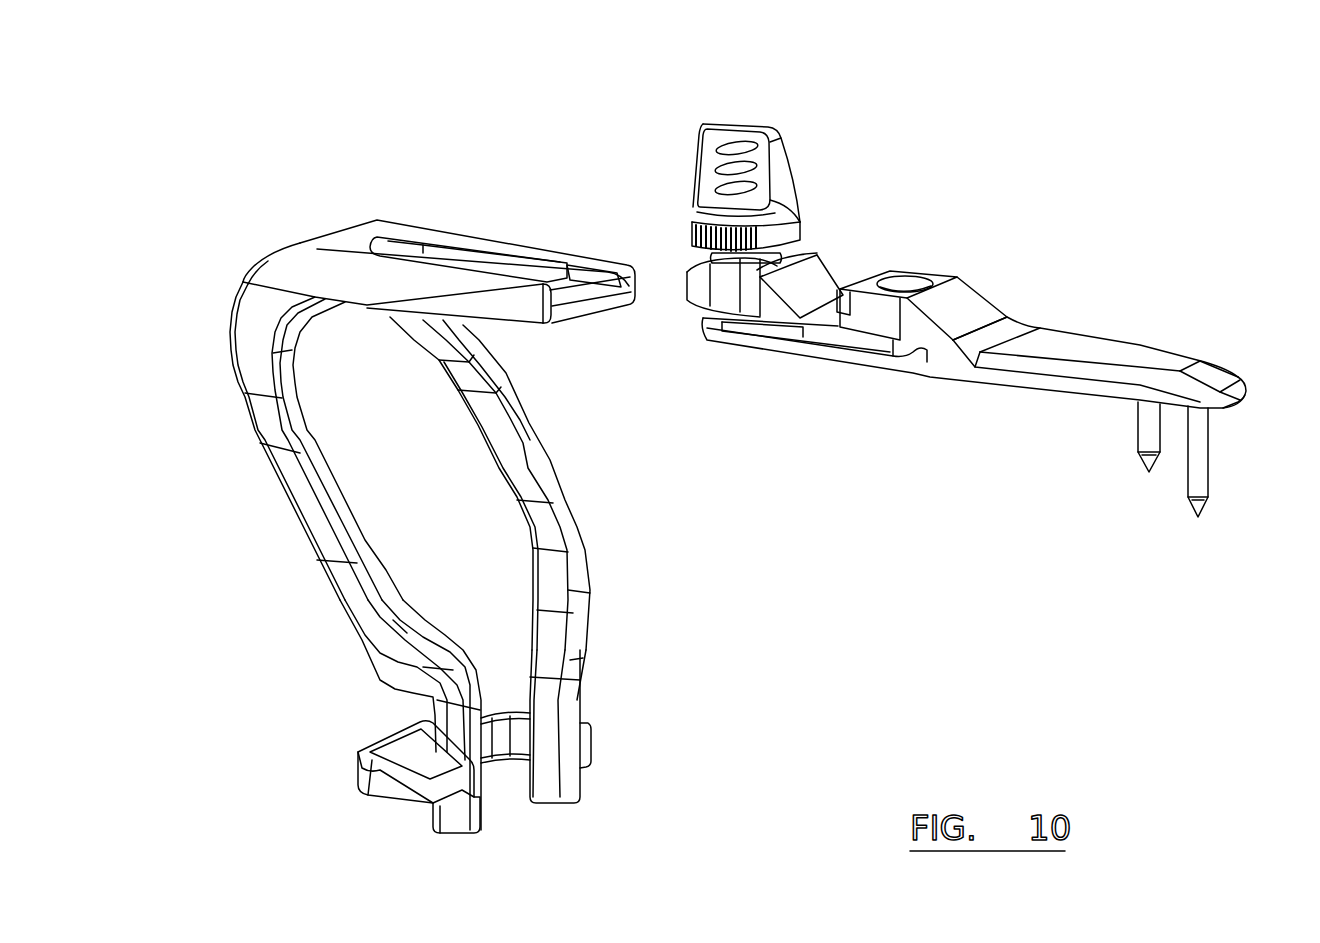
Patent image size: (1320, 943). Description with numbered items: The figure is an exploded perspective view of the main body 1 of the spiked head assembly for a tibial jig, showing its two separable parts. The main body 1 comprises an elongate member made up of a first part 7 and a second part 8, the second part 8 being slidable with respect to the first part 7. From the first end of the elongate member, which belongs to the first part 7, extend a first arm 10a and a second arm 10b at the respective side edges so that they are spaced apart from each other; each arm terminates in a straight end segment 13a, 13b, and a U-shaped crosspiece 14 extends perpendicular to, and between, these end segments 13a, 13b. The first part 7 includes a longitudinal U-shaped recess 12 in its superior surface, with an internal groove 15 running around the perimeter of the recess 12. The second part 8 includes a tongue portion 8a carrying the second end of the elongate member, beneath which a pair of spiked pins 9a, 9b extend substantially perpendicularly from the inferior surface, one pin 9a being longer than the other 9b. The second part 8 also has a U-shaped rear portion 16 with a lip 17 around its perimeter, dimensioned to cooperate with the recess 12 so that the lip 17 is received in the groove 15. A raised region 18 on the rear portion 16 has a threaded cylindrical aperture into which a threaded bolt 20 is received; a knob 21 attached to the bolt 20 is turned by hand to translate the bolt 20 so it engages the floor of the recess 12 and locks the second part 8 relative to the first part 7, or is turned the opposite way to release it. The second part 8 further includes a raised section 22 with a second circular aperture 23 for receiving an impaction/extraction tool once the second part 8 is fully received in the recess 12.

The main body 1 is at (1027, 203).
The first part 7 is at (387, 223).
The second part 8 is at (1004, 303).
The tongue portion 8a is at (1217, 373).
The spiked pin 9a is at (1203, 508).
The spiked pin 9b is at (1145, 465).
The first arm 10a is at (513, 457).
The second arm 10b is at (307, 502).
The U-shaped recess 12 is at (460, 255).
The straight end segment 13a is at (582, 687).
The straight end segment 13b is at (427, 693).
The U-shaped crosspiece 14 is at (397, 783).
The internal groove 15 is at (582, 282).
The U-shaped rear portion 16 is at (800, 353).
The lip 17 is at (735, 335).
The raised region 18 is at (850, 282).
The threaded bolt 20 is at (833, 282).
The knob 21 is at (787, 173).
The raised section 22 is at (970, 300).
The second circular aperture 23 is at (910, 279).